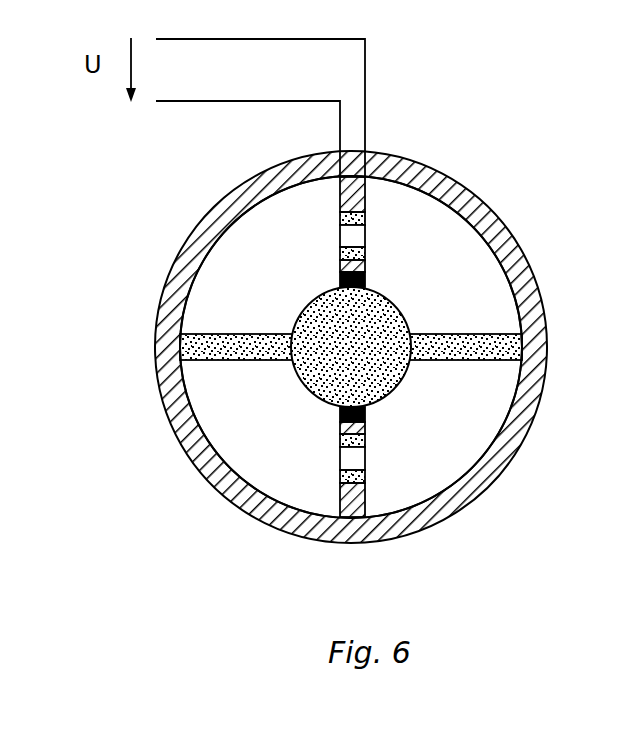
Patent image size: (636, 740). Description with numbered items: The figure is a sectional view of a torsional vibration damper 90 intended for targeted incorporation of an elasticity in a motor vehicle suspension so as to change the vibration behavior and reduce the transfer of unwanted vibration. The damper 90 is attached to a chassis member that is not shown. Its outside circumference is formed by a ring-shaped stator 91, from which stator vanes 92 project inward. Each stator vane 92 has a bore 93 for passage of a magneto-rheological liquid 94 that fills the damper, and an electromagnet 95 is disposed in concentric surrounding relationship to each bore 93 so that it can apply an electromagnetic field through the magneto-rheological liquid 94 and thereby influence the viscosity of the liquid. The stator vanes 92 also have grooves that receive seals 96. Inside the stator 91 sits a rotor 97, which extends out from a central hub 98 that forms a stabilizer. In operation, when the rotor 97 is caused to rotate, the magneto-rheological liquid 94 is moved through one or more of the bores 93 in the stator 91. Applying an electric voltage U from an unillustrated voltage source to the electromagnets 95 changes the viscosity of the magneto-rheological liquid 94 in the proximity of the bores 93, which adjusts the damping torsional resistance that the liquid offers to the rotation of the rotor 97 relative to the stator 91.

The torsional vibration damper 90 is at (401, 116).
The ring-shaped stator 91 is at (445, 207).
The stator vanes 92 is at (330, 515).
The bores 93 is at (350, 237).
The magneto-rheological liquid 94 is at (412, 483).
The electromagnet 95 is at (365, 250).
The seals 96 is at (368, 288).
The rotor 97 is at (460, 362).
The hub 98 is at (387, 373).